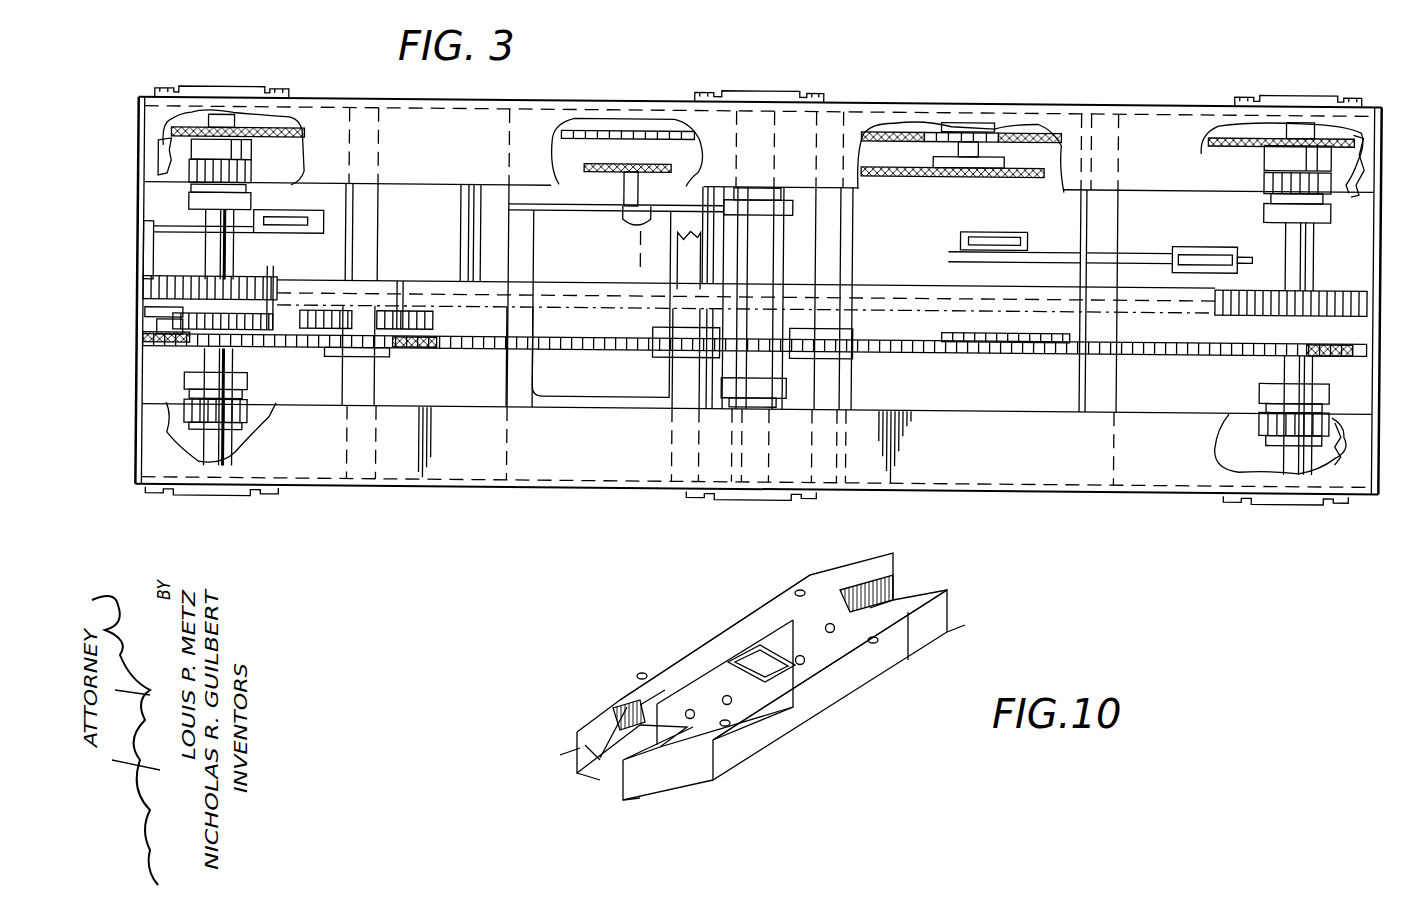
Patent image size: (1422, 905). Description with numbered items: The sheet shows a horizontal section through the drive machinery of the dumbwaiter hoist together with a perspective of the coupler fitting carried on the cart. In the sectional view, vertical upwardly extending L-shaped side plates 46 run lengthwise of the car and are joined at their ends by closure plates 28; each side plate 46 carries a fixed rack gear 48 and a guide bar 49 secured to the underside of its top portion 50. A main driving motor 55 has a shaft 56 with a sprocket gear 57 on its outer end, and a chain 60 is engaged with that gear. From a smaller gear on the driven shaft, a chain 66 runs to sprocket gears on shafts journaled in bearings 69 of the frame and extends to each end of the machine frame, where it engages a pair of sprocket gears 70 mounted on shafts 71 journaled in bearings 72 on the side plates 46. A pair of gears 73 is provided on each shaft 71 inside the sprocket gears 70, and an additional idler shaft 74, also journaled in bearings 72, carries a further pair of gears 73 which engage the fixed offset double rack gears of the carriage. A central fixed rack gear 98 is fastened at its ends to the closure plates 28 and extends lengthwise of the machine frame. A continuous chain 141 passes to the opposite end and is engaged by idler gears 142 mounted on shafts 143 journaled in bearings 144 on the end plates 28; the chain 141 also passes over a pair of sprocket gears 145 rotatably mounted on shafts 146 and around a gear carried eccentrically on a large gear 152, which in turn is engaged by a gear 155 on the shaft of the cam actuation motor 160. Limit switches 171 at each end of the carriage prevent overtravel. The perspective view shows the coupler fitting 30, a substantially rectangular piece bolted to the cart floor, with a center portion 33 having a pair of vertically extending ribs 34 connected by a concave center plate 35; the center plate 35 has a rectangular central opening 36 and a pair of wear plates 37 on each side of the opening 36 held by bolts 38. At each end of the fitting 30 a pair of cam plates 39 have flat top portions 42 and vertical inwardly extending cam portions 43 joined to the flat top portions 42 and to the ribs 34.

In FIG. 3, the closure plate 28 is at (137, 238).
In FIG. 3, the L-shaped side plate 46 is at (1180, 118).
In FIG. 3, the fixed rack gear 48 is at (162, 148).
In FIG. 3, the guide bar 49 is at (158, 166).
In FIG. 3, the top portion 50 is at (1000, 463).
In FIG. 3, the main driving motor 55 is at (605, 260).
In FIG. 3, the shaft 56 is at (652, 225).
In FIG. 3, the sprocket gear 57 is at (622, 165).
In FIG. 3, the chain 60 is at (906, 176).
In FIG. 3, the chain 66 is at (602, 146).
In FIG. 3, the bearing 69 is at (985, 125).
In FIG. 3, the sprocket gear 70 is at (232, 152).
In FIG. 3, the shaft 71 is at (226, 258).
In FIG. 3, the bearing 72 is at (230, 91).
In FIG. 3, the gear 73 is at (238, 175).
In FIG. 3, the idler shaft 74 is at (770, 272).
In FIG. 3, the central fixed rack gear 98 is at (183, 282).
In FIG. 3, the continuous chain 141 is at (260, 346).
In FIG. 3, the idler gear 142 is at (178, 340).
In FIG. 3, the shaft 143 is at (147, 346).
In FIG. 3, the bearing 144 is at (150, 318).
In FIG. 3, the sprocket gear 145 is at (428, 352).
In FIG. 3, the shaft 146 is at (280, 292).
In FIG. 3, the large gear 152 is at (322, 362).
In FIG. 3, the gear 155 is at (425, 322).
In FIG. 3, the cam actuation motor 160 is at (422, 243).
In FIG. 3, the limit switch 171 is at (305, 206).
In FIG. 10, the coupler fitting 30 is at (778, 590).
In FIG. 10, the center portion 33 is at (698, 672).
In FIG. 10, the rib 34 is at (712, 620).
In FIG. 10, the concave center plate 35 is at (760, 740).
In FIG. 10, the rectangular central opening 36 is at (800, 710).
In FIG. 10, the wear plate 37 is at (760, 678).
In FIG. 10, the bolt 38 is at (715, 700).
In FIG. 10, the cam plate 39 is at (950, 605).
In FIG. 10, the flat top portion 42 is at (918, 600).
In FIG. 10, the cam portion 43 is at (868, 585).